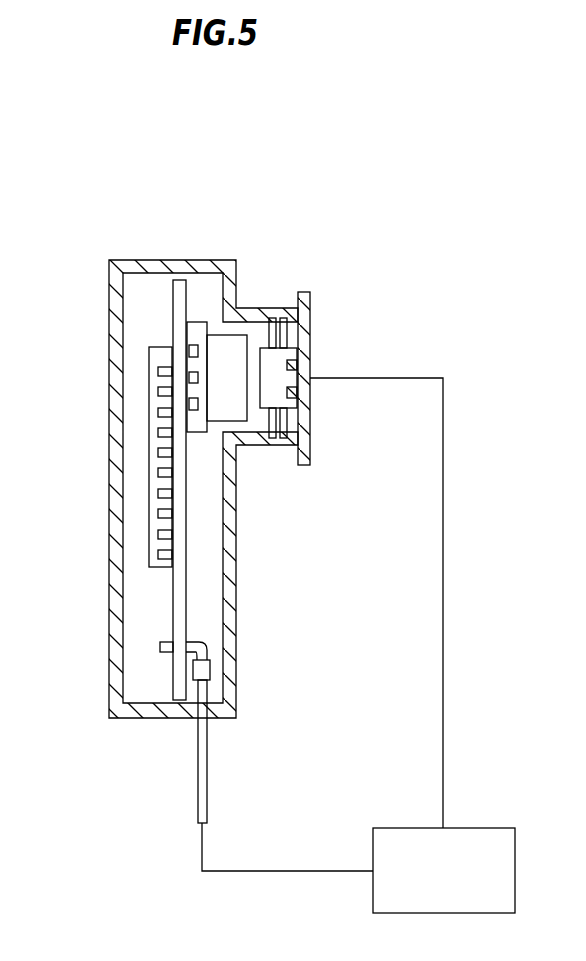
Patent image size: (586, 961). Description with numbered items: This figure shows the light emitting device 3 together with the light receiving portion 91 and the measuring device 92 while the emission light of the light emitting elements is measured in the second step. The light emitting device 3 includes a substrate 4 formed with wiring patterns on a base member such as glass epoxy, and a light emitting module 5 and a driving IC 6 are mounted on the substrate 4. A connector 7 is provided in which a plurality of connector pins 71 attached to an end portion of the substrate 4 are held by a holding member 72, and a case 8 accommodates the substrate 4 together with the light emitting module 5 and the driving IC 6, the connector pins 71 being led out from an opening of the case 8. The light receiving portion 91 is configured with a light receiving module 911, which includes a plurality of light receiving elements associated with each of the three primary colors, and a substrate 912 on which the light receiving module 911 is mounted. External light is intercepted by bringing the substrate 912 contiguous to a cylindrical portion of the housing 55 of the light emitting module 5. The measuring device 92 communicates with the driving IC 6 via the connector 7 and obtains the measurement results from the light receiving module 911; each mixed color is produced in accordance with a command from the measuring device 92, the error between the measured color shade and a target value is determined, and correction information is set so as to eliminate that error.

The light emitting device 3 is at (72, 260).
The substrate 4 is at (177, 282).
The light emitting module 5 is at (205, 322).
The housing 55 is at (220, 407).
The driving IC 6 is at (149, 454).
The connector 7 is at (305, 702).
The connector pins 71 is at (208, 763).
The holding member 72 is at (210, 677).
The case 8 is at (108, 347).
The light receiving portion 91 is at (400, 305).
The light receiving module 911 is at (278, 358).
The substrate 912 is at (305, 370).
The measuring device 92 is at (500, 827).